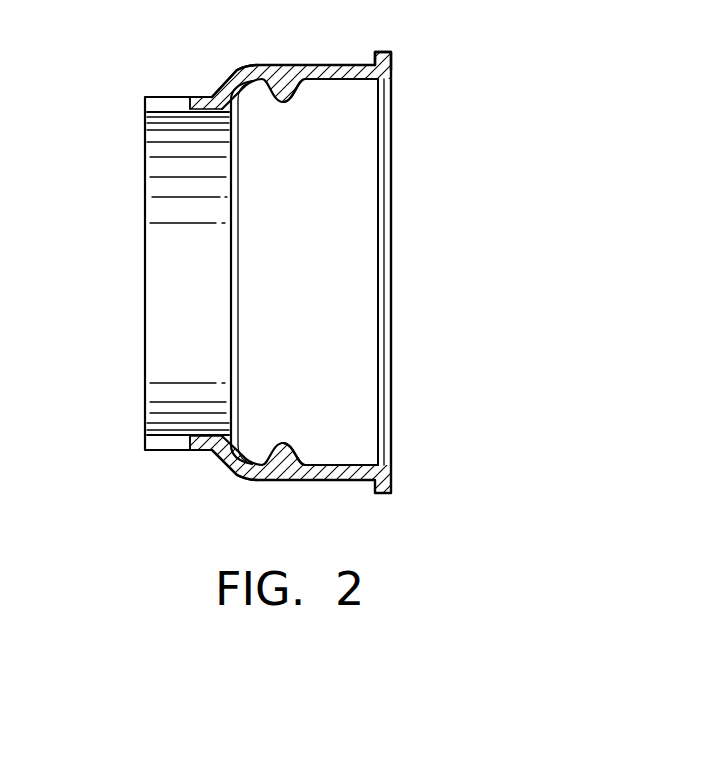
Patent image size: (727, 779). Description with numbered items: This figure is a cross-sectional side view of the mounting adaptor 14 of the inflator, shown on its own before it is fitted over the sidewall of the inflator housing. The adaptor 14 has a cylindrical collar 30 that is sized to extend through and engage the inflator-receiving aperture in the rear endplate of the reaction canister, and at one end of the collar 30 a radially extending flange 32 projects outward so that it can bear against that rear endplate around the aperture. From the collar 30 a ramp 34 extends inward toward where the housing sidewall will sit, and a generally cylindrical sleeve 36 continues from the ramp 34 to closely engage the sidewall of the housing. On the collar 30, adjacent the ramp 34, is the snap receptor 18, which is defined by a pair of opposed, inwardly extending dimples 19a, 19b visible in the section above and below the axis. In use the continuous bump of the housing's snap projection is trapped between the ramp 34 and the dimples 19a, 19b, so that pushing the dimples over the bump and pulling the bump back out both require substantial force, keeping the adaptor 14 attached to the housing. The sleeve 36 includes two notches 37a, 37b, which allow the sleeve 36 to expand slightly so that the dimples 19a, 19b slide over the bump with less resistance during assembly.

The mounting adaptor 14 is at (140, 178).
The snap receptor 18 is at (285, 105).
The dimple 19a is at (291, 103).
The dimple 19b is at (298, 445).
The cylindrical collar 30 is at (326, 65).
The radially extending flange 32 is at (392, 62).
The ramp 34 is at (232, 468).
The cylindrical sleeve 36 is at (194, 108).
The notch 37a is at (193, 108).
The notch 37b is at (193, 440).